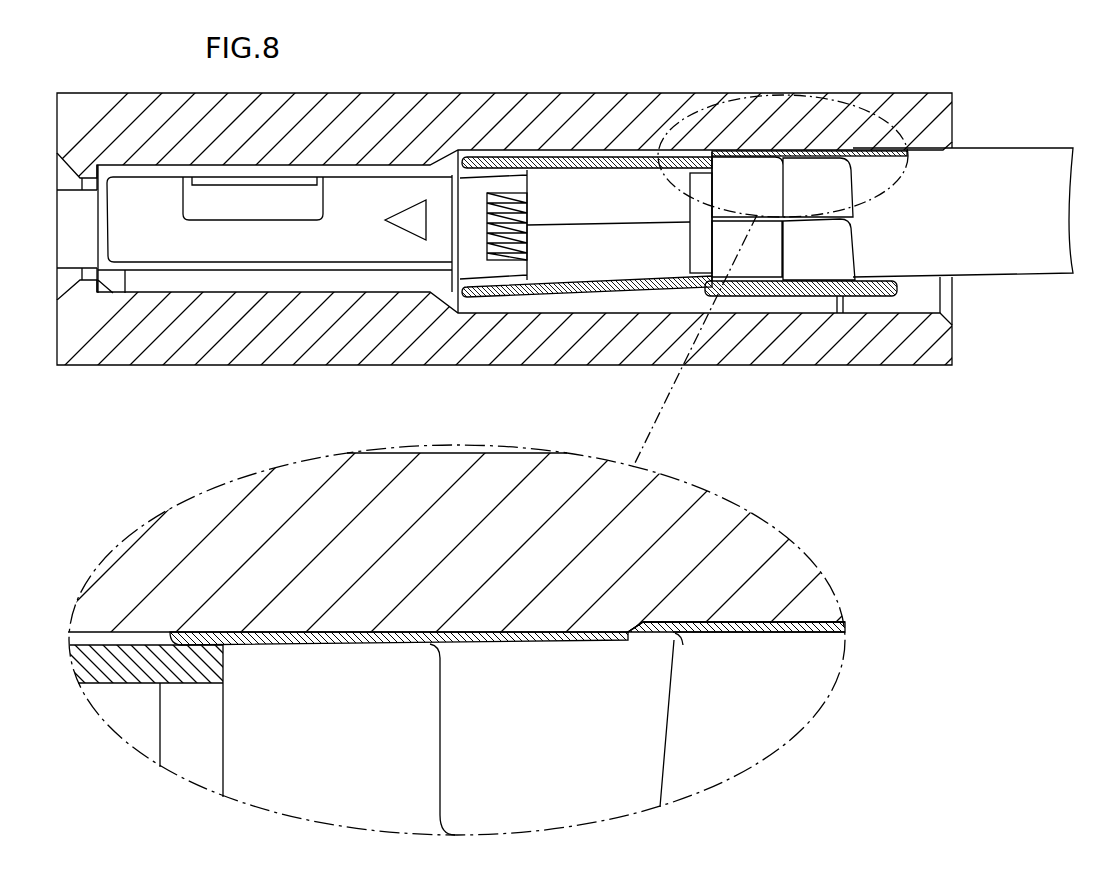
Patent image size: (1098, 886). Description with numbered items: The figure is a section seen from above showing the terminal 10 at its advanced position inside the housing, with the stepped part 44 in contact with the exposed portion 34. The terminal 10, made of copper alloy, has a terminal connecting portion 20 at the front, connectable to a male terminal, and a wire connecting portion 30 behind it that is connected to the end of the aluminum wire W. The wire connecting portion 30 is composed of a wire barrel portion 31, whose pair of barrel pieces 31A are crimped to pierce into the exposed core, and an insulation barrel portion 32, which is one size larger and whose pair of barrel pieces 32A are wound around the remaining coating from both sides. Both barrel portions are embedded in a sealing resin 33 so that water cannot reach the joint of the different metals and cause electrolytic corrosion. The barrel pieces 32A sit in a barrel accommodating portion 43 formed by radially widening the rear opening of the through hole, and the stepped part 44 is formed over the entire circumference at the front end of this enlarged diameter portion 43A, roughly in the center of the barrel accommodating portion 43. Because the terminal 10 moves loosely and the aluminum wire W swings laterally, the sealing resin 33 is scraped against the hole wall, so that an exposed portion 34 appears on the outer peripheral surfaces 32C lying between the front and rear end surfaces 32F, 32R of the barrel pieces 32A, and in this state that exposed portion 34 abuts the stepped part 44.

The terminal 10 is at (450, 163).
The terminal connecting portion 20 is at (140, 187).
The wire connecting portion 30 is at (668, 181).
The wire barrel portion 31 is at (603, 190).
The barrel pieces 31A is at (553, 190).
The insulation barrel portion 32 is at (783, 168).
The barrel pieces 32A is at (847, 173).
The front end surface 32F is at (420, 633).
The outer peripheral surfaces 32C is at (512, 632).
The rear end surface 32R is at (706, 622).
The sealing resin 33 is at (703, 172).
The exposed portion 34 is at (629, 631).
The barrel accommodating portion 43 is at (768, 302).
The enlarged diameter portion 43A is at (908, 311).
The stepped part 44 is at (848, 172).
The aluminum wire W is at (1033, 167).